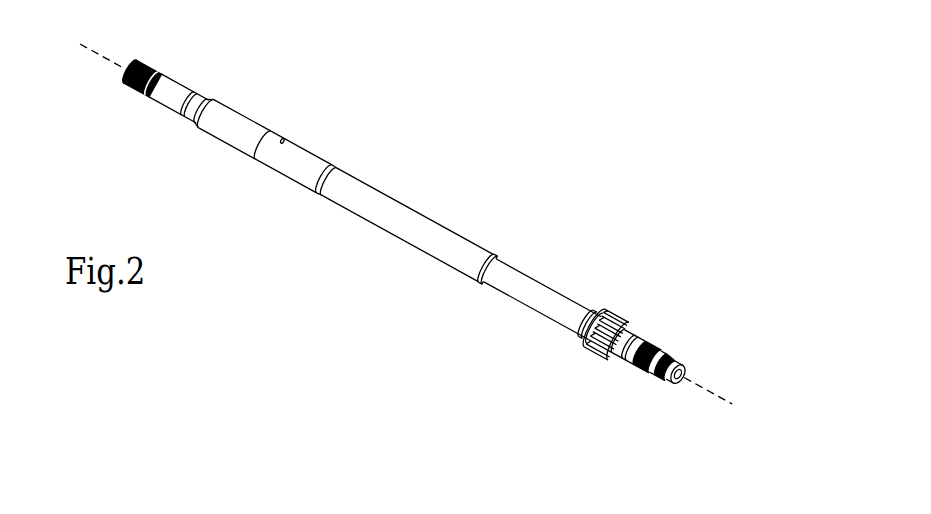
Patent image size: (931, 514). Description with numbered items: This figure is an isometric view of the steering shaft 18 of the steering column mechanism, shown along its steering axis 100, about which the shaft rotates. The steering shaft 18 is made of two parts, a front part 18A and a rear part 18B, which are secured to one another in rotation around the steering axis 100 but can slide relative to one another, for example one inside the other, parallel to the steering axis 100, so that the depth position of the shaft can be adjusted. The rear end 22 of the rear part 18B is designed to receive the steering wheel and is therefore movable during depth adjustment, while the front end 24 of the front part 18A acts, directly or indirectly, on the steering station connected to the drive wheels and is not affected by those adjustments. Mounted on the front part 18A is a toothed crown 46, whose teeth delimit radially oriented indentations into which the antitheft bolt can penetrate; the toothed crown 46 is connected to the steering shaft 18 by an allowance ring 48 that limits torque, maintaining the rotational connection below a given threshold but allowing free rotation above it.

The steering shaft 18 is at (481, 172).
The front part 18A is at (539, 288).
The rear part 18B is at (369, 199).
The rear end 22 is at (150, 70).
The front end 24 is at (656, 376).
The toothed crown 46 is at (615, 315).
The allowance ring 48 is at (639, 330).
The steering axis 100 is at (691, 382).